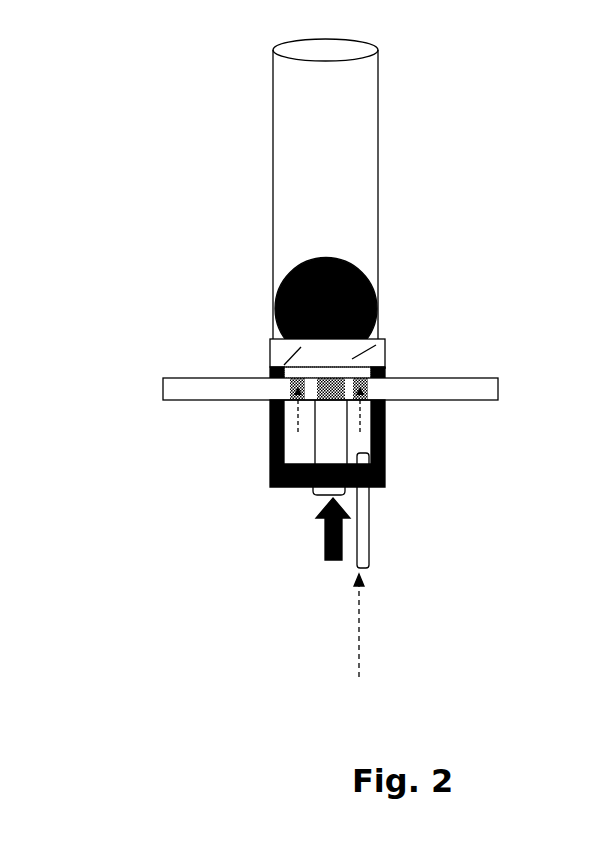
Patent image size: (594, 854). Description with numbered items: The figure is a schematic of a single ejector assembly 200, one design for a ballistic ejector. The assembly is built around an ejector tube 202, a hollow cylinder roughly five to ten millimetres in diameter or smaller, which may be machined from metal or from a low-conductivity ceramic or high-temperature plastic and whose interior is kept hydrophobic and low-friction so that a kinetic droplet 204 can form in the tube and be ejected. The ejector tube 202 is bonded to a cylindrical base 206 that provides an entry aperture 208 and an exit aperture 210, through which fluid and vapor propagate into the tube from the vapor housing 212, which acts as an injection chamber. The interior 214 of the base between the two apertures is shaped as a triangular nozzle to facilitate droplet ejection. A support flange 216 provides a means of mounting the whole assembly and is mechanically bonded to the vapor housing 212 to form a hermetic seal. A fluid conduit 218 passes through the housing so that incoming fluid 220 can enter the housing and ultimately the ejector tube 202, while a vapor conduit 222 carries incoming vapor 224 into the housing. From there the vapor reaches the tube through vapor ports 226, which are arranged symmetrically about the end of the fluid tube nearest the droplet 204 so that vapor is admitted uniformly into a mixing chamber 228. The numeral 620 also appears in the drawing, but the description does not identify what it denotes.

The single ejector assembly 200 is at (440, 160).
The ejector tube 202 is at (273, 103).
The kinetic droplet 204 is at (275, 310).
The cylindrical base 206 is at (262, 353).
The entry aperture 208 is at (386, 368).
The exit aperture 210 is at (385, 340).
The vapor housing 212 is at (386, 473).
The interior of the base 214 is at (275, 343).
The support flange 216 is at (163, 397).
The fluid conduit 218 is at (312, 490).
The incoming fluid 220 is at (324, 535).
The vapor conduit 222 is at (371, 530).
The incoming vapor 224 is at (355, 643).
The vapor ports 226 is at (380, 386).
The mixing chamber 228 is at (271, 372).
The channel 620 is at (270, 422).